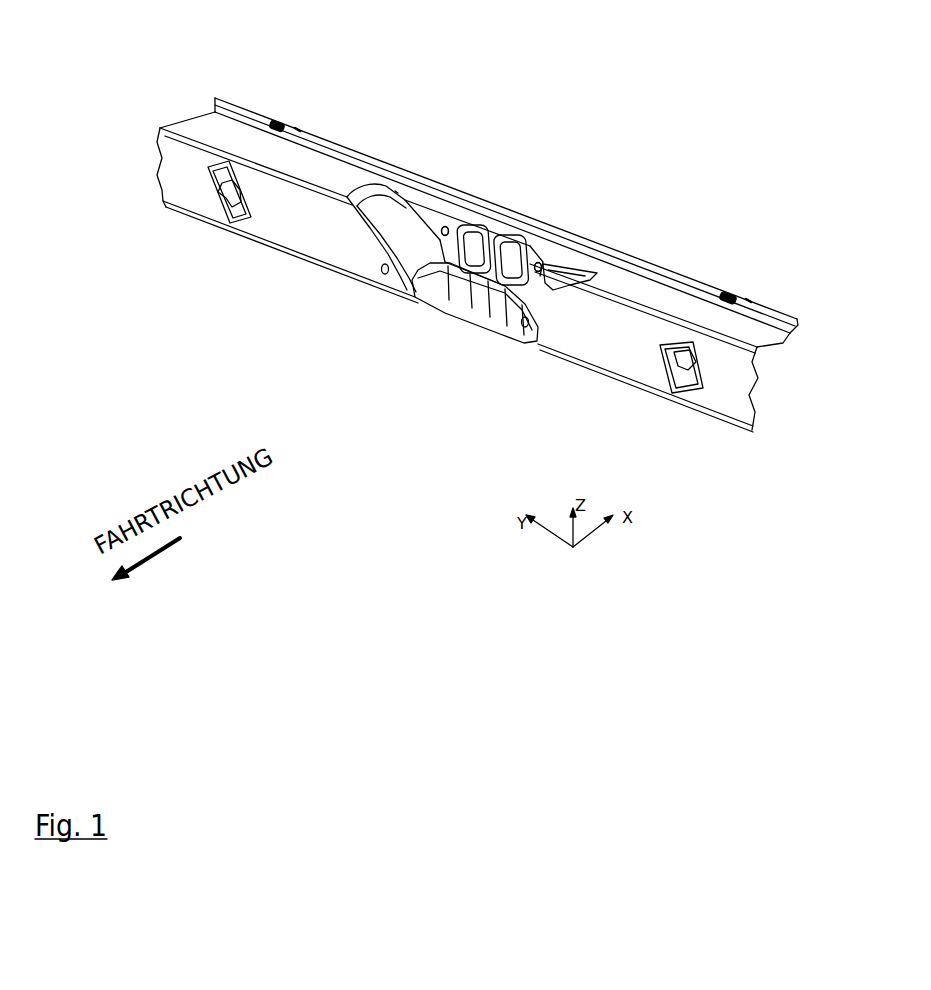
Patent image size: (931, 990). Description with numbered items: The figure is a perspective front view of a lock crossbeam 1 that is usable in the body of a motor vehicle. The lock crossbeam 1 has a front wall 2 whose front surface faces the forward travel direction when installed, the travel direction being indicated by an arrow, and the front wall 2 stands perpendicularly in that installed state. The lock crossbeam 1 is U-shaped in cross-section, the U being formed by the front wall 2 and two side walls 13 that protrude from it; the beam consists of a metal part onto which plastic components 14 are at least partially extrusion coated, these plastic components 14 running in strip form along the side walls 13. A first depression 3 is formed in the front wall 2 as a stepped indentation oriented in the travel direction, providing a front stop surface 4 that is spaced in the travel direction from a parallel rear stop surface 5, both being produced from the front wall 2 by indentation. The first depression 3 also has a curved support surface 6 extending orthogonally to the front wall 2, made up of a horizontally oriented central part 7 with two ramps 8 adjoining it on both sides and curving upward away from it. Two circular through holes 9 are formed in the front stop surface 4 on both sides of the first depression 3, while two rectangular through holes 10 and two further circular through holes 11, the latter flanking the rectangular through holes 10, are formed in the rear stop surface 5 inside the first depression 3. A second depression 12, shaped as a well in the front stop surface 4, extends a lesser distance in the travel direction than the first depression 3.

The lock crossbeam 1 is at (425, 444).
The front wall 2 is at (360, 252).
The first depression 3 is at (505, 161).
The front stop surface 4 is at (377, 262).
The rear stop surface 5 is at (436, 221).
The support surface 6 is at (505, 293).
The central part 7 is at (482, 287).
The ramps 8 is at (388, 220).
The circular through holes 9 is at (379, 290).
The rectangular through holes 10 is at (485, 239).
The further circular through holes 11 is at (435, 248).
The second depression 12 is at (462, 300).
The side walls 13 is at (228, 138).
The plastic components 14 is at (713, 293).